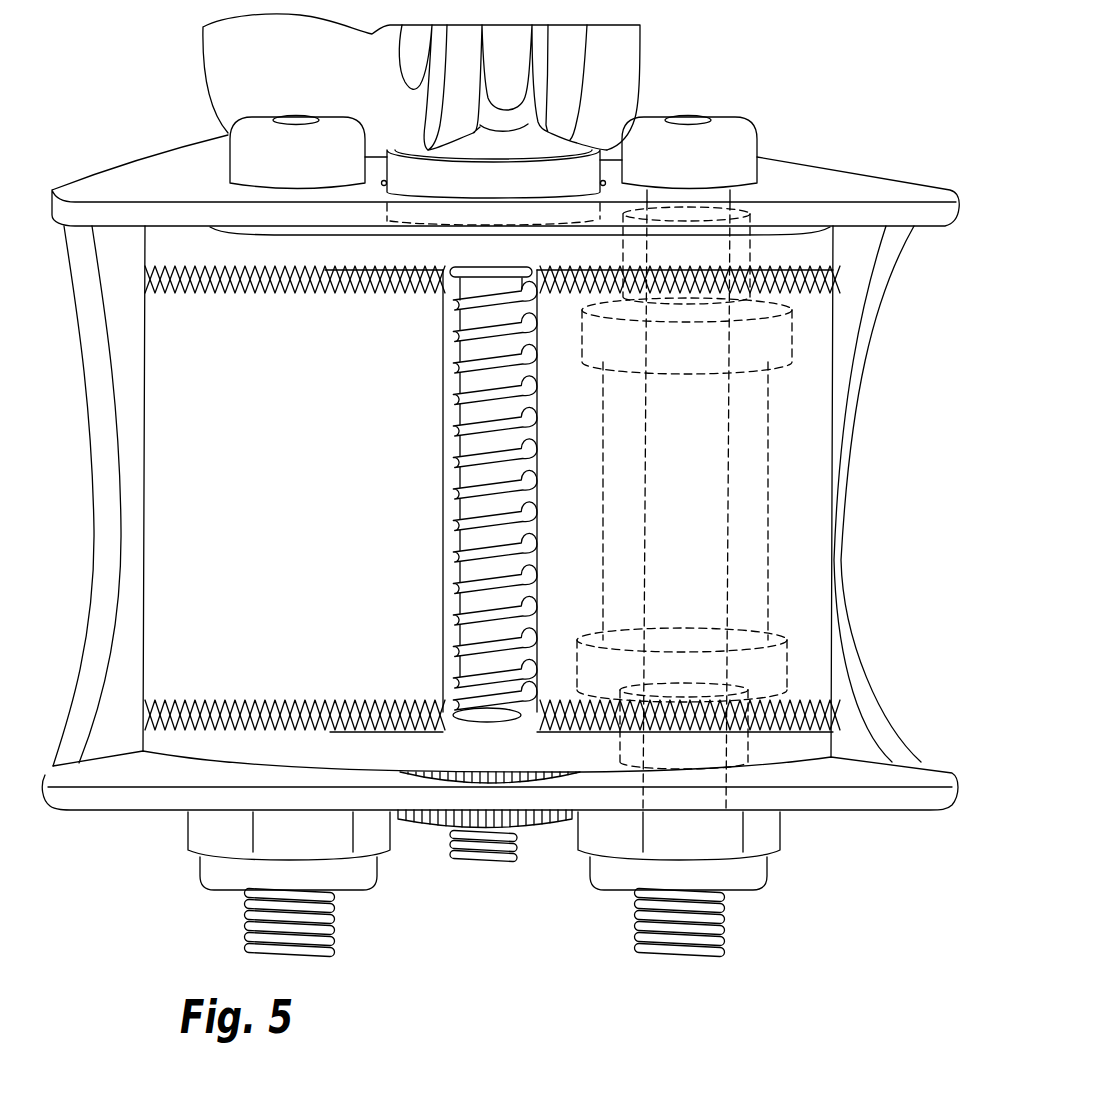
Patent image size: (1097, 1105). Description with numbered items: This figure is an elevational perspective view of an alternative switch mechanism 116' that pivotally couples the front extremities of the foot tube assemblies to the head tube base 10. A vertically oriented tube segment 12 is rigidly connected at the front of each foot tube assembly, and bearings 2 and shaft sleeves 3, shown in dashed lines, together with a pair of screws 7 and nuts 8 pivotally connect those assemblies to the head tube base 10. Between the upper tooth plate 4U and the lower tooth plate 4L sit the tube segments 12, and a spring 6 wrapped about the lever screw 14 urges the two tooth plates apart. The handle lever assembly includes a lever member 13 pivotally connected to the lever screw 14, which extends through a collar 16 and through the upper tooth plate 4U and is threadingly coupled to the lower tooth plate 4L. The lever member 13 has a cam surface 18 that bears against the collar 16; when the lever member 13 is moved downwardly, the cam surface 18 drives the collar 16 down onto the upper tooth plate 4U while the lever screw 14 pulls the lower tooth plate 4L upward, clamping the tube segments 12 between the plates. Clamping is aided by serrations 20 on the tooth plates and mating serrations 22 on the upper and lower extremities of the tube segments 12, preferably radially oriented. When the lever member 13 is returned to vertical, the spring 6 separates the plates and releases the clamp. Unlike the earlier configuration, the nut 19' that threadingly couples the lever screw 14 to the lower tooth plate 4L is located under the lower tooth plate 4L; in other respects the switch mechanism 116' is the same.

The bearing 2 is at (700, 267).
The shaft sleeve 3 is at (696, 361).
The upper tooth plate 4U is at (493, 267).
The lower tooth plate 4L is at (410, 764).
The spring 6 is at (453, 405).
The screw 7 is at (260, 118).
The nut 8 is at (763, 883).
The head tube base 10 is at (858, 350).
The tube segment 12 is at (312, 557).
The lever member 13 is at (456, 82).
The lever screw 14 is at (523, 432).
The collar 16 is at (603, 170).
The cam surface 18 is at (425, 147).
The nut 19' is at (489, 840).
The serrations 20 is at (273, 270).
The serrations 22 is at (293, 290).
The switch mechanism 116' is at (500, 538).